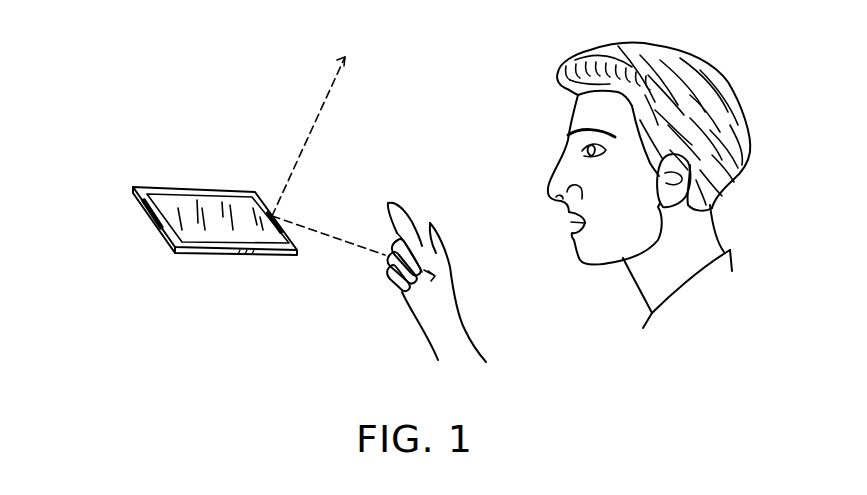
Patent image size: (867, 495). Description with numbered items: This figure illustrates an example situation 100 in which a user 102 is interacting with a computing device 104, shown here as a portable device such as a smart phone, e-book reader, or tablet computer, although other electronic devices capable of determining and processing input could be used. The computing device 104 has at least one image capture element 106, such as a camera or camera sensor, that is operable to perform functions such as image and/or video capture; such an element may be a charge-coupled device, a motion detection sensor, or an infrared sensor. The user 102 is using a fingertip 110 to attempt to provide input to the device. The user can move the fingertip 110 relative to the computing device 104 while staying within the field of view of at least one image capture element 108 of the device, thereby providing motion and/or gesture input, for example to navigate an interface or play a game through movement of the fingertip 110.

The example situation 100 is at (86, 82).
The user 102 is at (508, 102).
The computing device 104 is at (220, 254).
The image capture element 106 is at (292, 223).
The image capture element 108 is at (322, 105).
The fingertip 110 is at (410, 208).